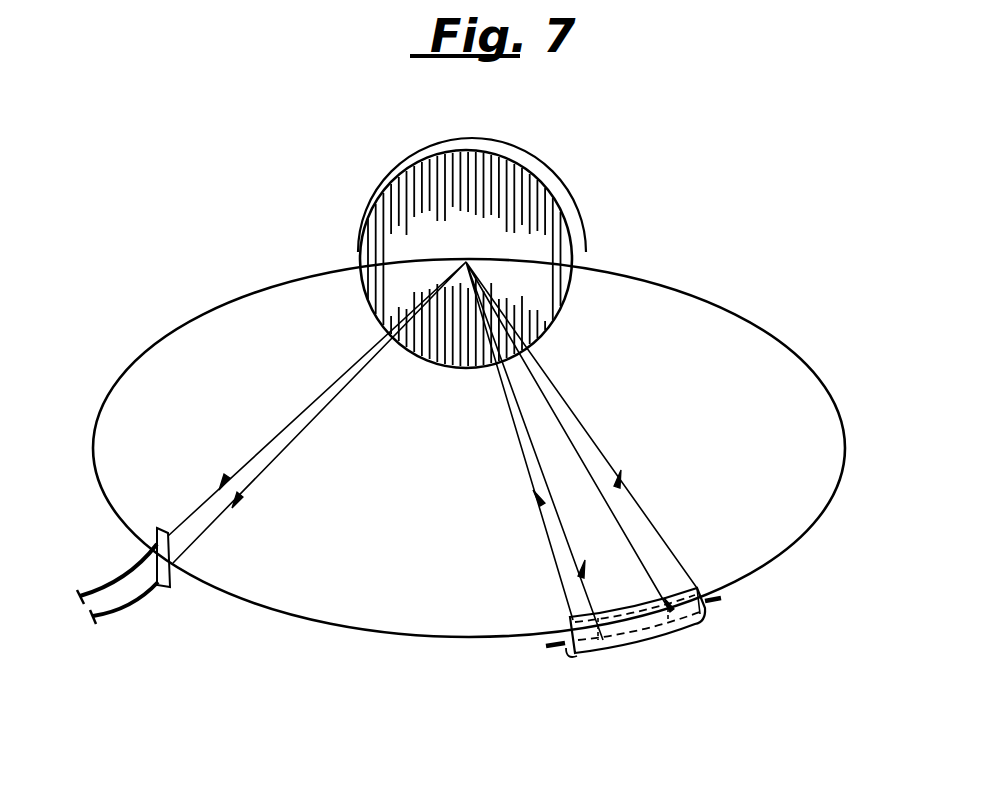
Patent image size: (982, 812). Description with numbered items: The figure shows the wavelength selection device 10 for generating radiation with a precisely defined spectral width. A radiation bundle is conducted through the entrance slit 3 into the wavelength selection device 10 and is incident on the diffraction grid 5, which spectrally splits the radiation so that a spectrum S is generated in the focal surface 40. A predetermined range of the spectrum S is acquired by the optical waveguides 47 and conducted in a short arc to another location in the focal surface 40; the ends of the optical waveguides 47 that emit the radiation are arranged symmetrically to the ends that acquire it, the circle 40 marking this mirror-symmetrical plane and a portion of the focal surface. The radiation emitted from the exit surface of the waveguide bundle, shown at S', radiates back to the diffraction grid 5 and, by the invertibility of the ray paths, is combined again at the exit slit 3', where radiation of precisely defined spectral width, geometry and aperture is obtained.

The wavelength selection device 10 is at (738, 240).
The focal surface 40 is at (770, 330).
The diffraction grid 5 is at (548, 222).
The entrance slit 3 is at (122, 566).
The exit slit 3' is at (141, 621).
The optical waveguides 47 is at (573, 656).
The spectrum S is at (674, 655).
The detector surface image S' is at (698, 549).